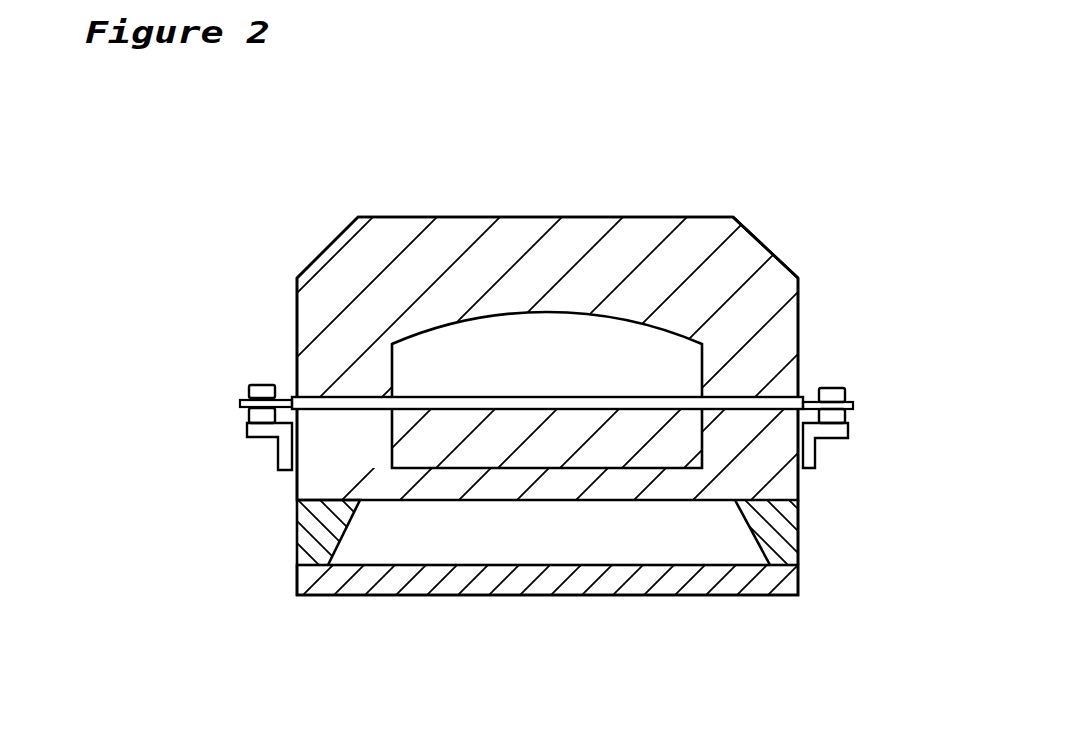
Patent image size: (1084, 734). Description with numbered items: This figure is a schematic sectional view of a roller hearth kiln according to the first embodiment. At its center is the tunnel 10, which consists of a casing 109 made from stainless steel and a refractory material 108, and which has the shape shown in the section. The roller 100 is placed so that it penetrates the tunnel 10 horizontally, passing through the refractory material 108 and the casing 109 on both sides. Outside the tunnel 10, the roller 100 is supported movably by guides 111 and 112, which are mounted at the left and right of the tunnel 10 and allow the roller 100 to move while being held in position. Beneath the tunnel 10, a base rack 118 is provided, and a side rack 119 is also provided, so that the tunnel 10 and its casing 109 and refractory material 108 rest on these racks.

The tunnel 10 is at (533, 217).
The refractory material 108 is at (662, 265).
The casing 109 is at (764, 244).
The roller 100 is at (748, 410).
The guide 112 is at (830, 392).
The guide 111 is at (833, 432).
The side rack 119 is at (785, 543).
The base rack 118 is at (337, 577).